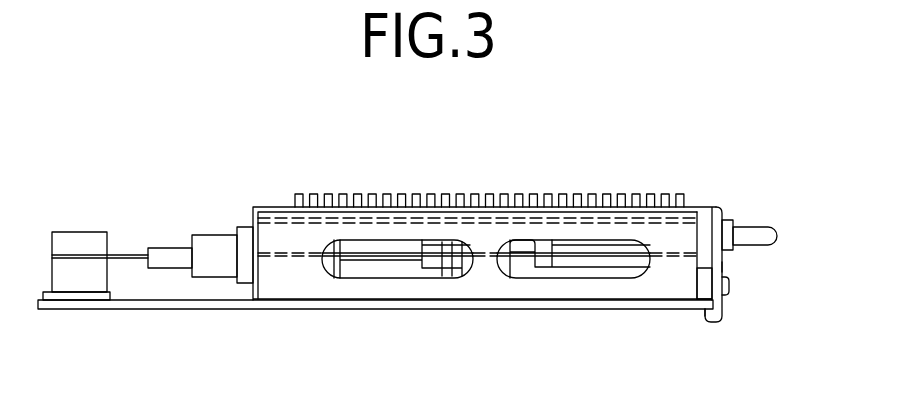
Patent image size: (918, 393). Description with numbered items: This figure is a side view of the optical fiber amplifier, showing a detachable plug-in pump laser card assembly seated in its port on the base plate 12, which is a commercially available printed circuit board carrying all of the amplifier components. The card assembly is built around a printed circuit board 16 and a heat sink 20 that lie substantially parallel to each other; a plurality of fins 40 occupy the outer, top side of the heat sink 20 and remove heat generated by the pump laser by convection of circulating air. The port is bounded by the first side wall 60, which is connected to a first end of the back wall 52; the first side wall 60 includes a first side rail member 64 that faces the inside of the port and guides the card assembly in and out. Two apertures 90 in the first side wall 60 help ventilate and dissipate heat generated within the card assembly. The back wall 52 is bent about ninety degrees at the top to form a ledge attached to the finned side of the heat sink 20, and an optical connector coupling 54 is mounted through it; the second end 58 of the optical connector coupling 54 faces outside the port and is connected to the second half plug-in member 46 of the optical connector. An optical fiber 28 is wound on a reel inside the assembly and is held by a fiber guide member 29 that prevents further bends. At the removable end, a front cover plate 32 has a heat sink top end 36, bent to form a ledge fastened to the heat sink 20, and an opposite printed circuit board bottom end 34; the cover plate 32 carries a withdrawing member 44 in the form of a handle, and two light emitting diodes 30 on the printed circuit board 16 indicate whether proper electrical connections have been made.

The base plate 12 is at (145, 303).
The printed circuit board 16 is at (612, 273).
The heat sink 20 is at (419, 188).
The optical fiber 28 is at (358, 257).
The fiber guide member 29 is at (83, 277).
The light emitting diodes 30 is at (727, 286).
The front cover plate 32 is at (723, 267).
The printed circuit board bottom end 34 is at (712, 320).
The heat sink top end 36 is at (703, 206).
The fins 40 is at (461, 196).
The withdrawing member 44 is at (763, 235).
The second half plug-in member 46 is at (171, 248).
The back wall 52 is at (262, 207).
The optical connector coupling 54 is at (213, 236).
The second end 58 is at (190, 270).
The first side wall 60 is at (303, 290).
The first side rail member 64 is at (575, 207).
The apertures 90 is at (530, 268).